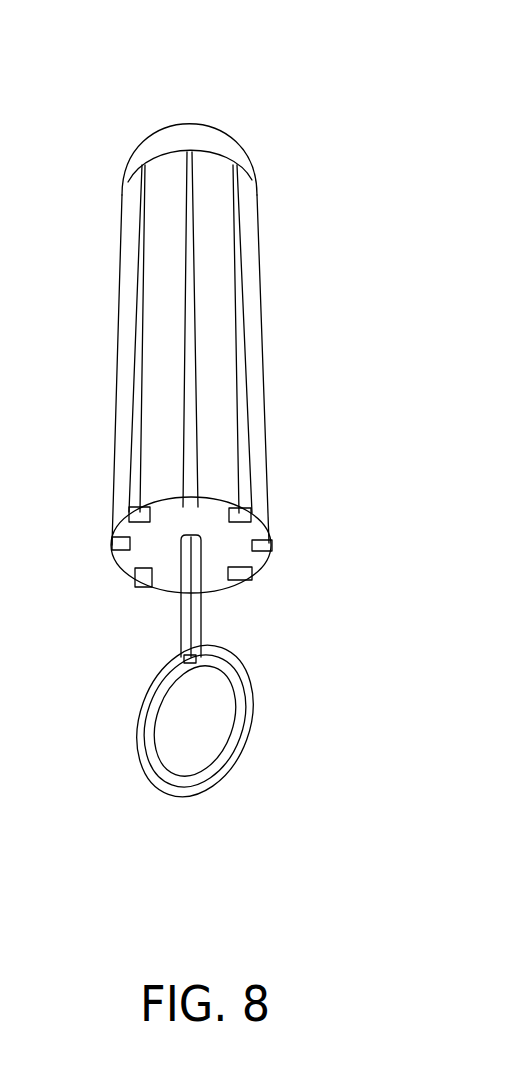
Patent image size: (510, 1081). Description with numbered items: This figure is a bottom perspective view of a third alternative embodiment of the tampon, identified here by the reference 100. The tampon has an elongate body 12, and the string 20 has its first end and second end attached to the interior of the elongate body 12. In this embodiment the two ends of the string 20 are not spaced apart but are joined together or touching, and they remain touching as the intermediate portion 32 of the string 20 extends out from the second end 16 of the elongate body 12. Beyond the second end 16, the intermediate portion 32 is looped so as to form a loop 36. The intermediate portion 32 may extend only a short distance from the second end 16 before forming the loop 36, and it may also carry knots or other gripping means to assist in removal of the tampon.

The applicator assembly 100 is at (258, 76).
The elongate body 12 is at (218, 318).
The second end 16 is at (223, 538).
The intermediate portion 32 is at (197, 607).
The string 20 is at (135, 735).
The loop 36 is at (276, 710).